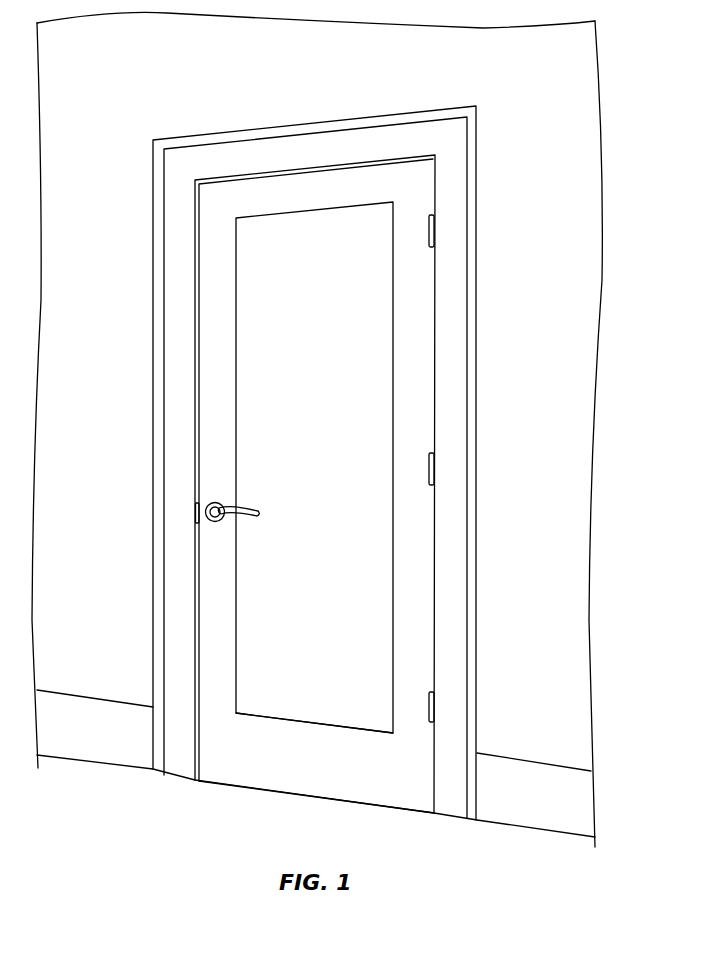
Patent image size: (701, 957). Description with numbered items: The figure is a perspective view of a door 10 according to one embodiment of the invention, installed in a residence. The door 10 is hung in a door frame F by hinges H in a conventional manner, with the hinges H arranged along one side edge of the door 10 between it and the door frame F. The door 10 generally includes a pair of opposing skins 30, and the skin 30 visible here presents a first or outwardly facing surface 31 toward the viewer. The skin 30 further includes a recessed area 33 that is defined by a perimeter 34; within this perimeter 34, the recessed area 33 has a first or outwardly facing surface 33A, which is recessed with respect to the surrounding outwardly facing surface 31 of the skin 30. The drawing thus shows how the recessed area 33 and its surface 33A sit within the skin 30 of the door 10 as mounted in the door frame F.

The door 10 is at (192, 336).
The skin 30 is at (270, 757).
The outwardly facing surface 31 is at (337, 775).
The recessed area 33 is at (365, 371).
The outwardly facing surface of recessed area 33A is at (333, 479).
The perimeter 34 is at (395, 610).
The door frame F is at (298, 167).
The hinges H is at (436, 230).